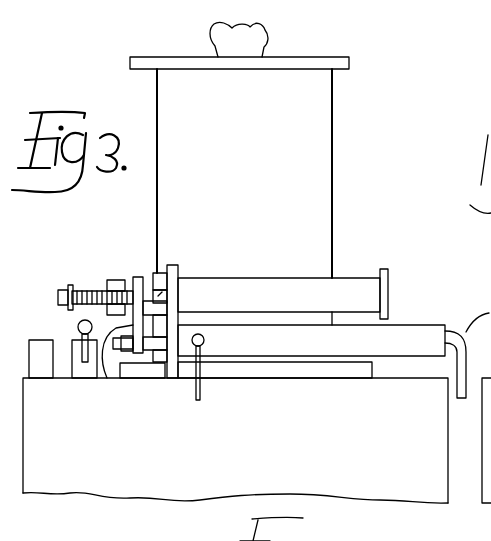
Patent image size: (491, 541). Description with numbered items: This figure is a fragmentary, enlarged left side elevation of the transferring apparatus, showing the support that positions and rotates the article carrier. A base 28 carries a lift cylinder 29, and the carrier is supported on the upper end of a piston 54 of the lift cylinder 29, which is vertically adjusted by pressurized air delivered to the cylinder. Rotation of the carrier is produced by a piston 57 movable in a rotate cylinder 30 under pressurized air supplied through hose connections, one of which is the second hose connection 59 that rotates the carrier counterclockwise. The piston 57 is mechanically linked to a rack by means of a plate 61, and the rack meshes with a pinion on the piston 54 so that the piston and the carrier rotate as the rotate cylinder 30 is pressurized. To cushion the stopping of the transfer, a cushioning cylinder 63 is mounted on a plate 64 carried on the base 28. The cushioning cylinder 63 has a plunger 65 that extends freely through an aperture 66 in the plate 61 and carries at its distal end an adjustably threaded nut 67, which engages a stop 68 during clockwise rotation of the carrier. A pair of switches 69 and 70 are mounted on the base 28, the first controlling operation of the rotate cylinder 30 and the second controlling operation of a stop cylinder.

The base 28 is at (407, 492).
The lift cylinder 29 is at (320, 213).
The rotate cylinder 30 is at (410, 345).
The piston 54 is at (272, 33).
The piston 57 is at (148, 365).
The second hose connection 59 is at (205, 345).
The plate 61 is at (106, 380).
The cushioning cylinder 63 is at (355, 285).
The plate 64 is at (175, 270).
The plunger 65 is at (83, 288).
The aperture 66 is at (137, 277).
The adjustably threaded nut 67 is at (68, 288).
The stop 68 is at (105, 280).
The switch 69 is at (38, 372).
The switch 70 is at (78, 372).